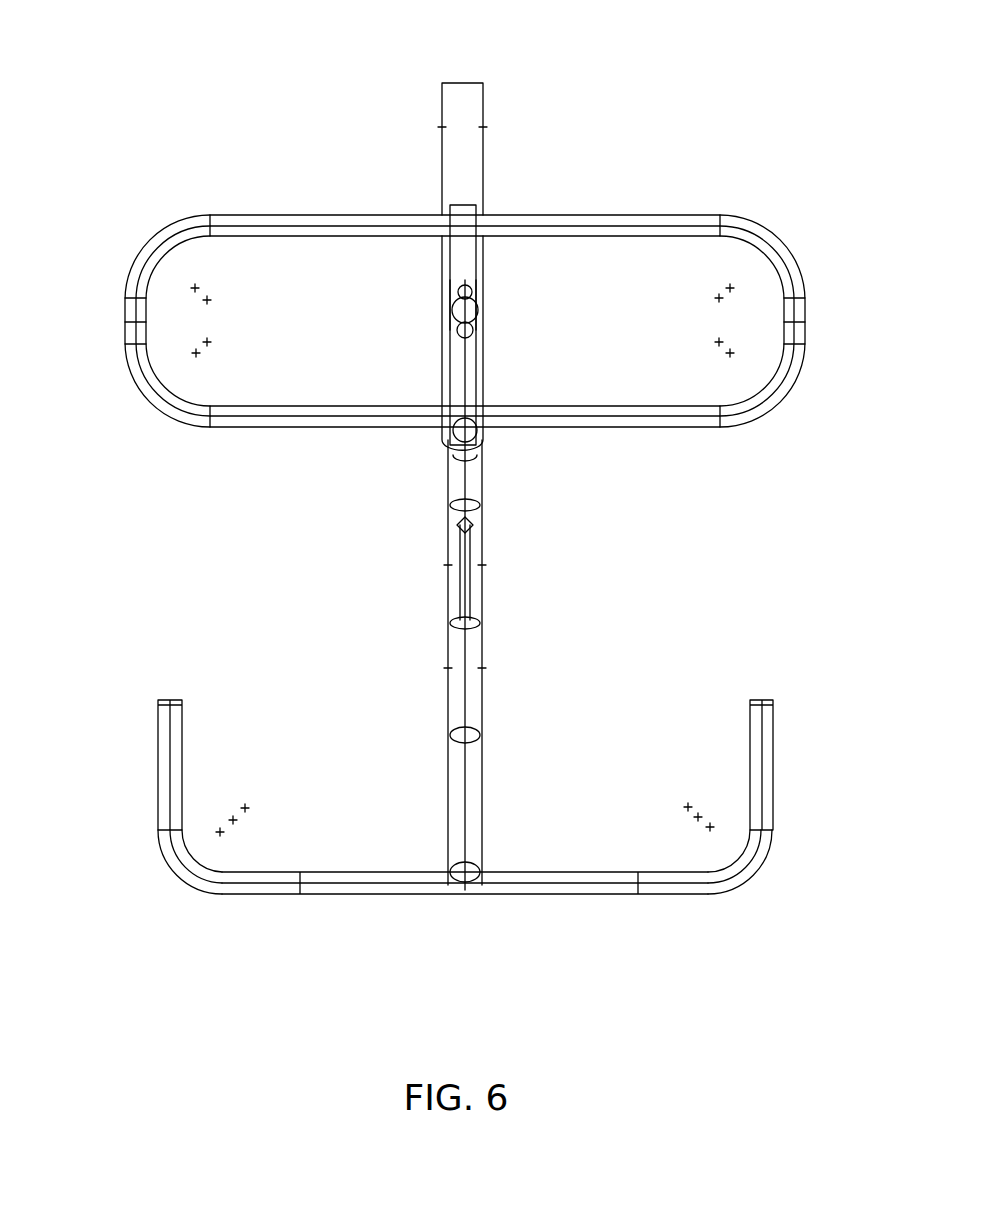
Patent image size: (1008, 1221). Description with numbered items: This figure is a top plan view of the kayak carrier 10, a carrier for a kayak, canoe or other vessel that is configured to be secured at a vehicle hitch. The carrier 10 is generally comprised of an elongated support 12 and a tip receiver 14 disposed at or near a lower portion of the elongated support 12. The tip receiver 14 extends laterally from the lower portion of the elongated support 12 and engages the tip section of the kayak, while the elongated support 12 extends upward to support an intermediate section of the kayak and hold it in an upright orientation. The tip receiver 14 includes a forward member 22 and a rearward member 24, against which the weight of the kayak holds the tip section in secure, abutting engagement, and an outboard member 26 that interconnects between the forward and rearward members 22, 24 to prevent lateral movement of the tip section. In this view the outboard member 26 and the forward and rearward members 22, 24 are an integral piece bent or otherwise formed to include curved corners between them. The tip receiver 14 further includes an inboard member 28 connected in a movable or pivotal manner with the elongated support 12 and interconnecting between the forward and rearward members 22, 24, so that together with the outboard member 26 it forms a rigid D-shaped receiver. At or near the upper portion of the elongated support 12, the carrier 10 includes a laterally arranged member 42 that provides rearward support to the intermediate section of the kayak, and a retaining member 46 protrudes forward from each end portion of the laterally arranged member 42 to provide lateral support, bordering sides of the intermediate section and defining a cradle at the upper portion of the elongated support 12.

The kayak carrier 10 is at (278, 104).
The elongated support 12 is at (503, 660).
The tip receiver 14 is at (675, 186).
The forward member 22 is at (570, 222).
The rearward member 24 is at (598, 420).
The outboard member 26 is at (800, 327).
The inboard member 28 is at (485, 265).
The laterally arranged member 42 is at (338, 888).
The retaining member 46 is at (170, 780).